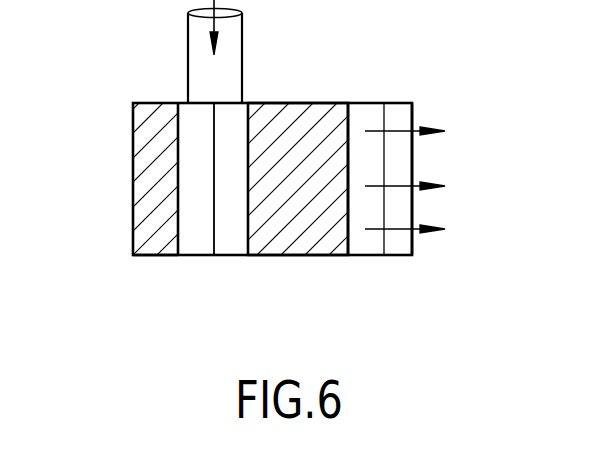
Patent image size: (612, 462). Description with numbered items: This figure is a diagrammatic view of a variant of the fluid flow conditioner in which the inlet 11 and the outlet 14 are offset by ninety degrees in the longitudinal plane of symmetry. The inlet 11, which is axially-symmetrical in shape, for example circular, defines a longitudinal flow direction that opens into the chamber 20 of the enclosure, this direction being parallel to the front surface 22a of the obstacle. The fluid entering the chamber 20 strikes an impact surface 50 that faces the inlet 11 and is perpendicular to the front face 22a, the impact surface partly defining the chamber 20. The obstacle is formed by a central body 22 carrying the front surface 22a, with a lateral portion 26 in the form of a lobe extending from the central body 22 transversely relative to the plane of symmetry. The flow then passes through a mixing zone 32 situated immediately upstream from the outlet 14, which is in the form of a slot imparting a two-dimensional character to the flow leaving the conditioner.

The inlet 11 is at (188, 47).
The lateral portion 26 is at (230, 132).
The front surface 22a is at (248, 168).
The chamber 20 is at (198, 197).
The impact surface 50 is at (192, 252).
The central body 22 is at (290, 218).
The mixing zone 32 is at (365, 243).
The outlet 14 is at (400, 207).